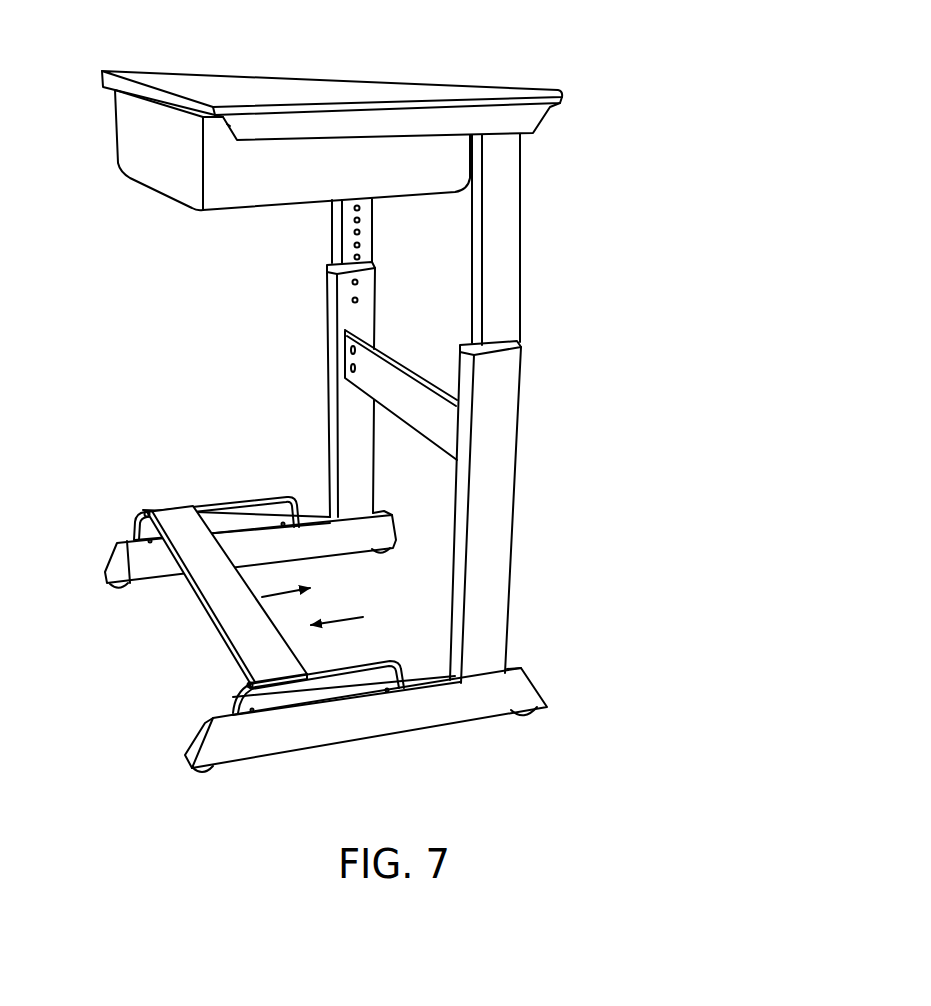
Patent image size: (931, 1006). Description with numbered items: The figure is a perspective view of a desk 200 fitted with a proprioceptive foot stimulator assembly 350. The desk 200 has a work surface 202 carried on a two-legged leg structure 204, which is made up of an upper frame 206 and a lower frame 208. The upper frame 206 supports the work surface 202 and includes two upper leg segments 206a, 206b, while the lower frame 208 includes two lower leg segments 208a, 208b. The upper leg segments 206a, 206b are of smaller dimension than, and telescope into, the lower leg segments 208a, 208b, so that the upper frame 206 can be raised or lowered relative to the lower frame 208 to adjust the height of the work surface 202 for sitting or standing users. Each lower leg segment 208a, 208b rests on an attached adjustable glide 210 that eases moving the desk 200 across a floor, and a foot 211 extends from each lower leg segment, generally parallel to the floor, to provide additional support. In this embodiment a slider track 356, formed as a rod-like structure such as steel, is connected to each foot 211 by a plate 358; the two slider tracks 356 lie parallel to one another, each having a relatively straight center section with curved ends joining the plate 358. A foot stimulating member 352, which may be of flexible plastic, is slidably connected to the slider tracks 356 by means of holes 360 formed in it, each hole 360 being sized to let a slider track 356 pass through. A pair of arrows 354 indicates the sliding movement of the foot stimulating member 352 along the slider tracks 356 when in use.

The desk 200 is at (327, 414).
The work surface 202 is at (283, 78).
The leg structure 204 is at (327, 476).
The upper frame 206 is at (433, 239).
The upper leg segment 206a is at (350, 226).
The upper leg segment 206b is at (506, 203).
The lower frame 208 is at (426, 472).
The lower leg segment 208a is at (350, 318).
The lower leg segment 208b is at (491, 582).
The adjustable glide 210 is at (120, 587).
The foot 211 is at (130, 558).
The proprioceptive foot stimulator assembly 350 is at (248, 618).
The foot stimulating member 352 is at (227, 597).
The arrows 354 is at (318, 623).
The slider track 356 is at (258, 498).
The plate 358 is at (233, 522).
The hole 360 is at (146, 512).